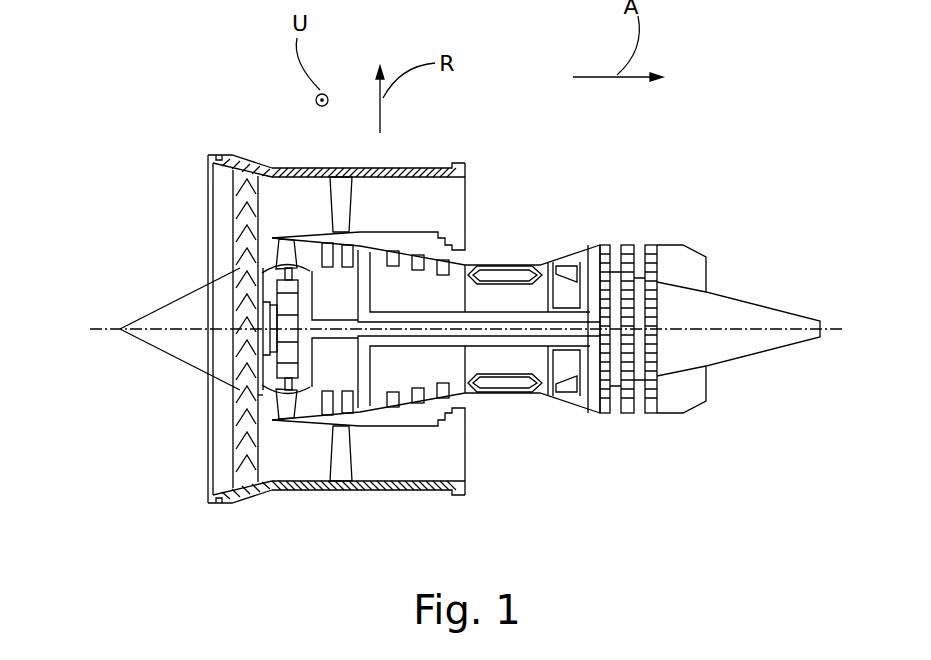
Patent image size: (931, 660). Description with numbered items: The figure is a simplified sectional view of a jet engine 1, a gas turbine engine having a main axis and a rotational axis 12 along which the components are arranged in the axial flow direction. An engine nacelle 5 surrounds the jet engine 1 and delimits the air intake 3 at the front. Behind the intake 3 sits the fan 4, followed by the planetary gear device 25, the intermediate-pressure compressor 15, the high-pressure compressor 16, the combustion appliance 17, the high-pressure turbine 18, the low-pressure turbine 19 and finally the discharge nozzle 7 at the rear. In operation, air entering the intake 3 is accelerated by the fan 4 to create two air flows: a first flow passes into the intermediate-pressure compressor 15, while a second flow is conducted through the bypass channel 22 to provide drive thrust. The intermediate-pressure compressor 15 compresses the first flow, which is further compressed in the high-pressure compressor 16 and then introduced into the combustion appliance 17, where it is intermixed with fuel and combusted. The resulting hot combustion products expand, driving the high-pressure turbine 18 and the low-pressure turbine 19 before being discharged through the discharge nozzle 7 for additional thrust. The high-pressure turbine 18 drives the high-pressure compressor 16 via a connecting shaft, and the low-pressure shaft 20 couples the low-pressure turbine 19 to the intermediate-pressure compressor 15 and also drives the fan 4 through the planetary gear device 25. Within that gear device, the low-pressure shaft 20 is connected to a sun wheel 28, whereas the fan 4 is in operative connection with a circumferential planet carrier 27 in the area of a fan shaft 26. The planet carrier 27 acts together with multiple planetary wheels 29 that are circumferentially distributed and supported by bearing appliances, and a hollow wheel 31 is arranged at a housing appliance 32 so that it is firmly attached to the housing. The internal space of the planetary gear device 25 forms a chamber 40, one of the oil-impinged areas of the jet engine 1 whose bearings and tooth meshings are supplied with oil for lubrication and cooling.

The jet engine 1 is at (709, 174).
The air intake 3 is at (180, 189).
The fan 4 is at (245, 462).
The engine nacelle 5 is at (405, 168).
The discharge nozzle 7 is at (700, 278).
The rotational axis 12 is at (100, 328).
The intermediate-pressure compressor 15 is at (348, 176).
The high-pressure compressor 16 is at (453, 288).
The combustion appliance 17 is at (503, 388).
The high-pressure turbine 18 is at (583, 262).
The low-pressure turbine 19 is at (627, 244).
The low-pressure shaft 20 is at (372, 402).
The bypass channel 22 is at (455, 195).
The planetary gear device 25 is at (291, 396).
The fan shaft 26 is at (262, 322).
The planet carrier 27 is at (277, 298).
The sun wheel 28 is at (262, 350).
The planetary wheels 29 is at (298, 290).
The hollow wheel 31 is at (272, 283).
The housing appliance 32 is at (262, 405).
The chamber 40 is at (262, 380).